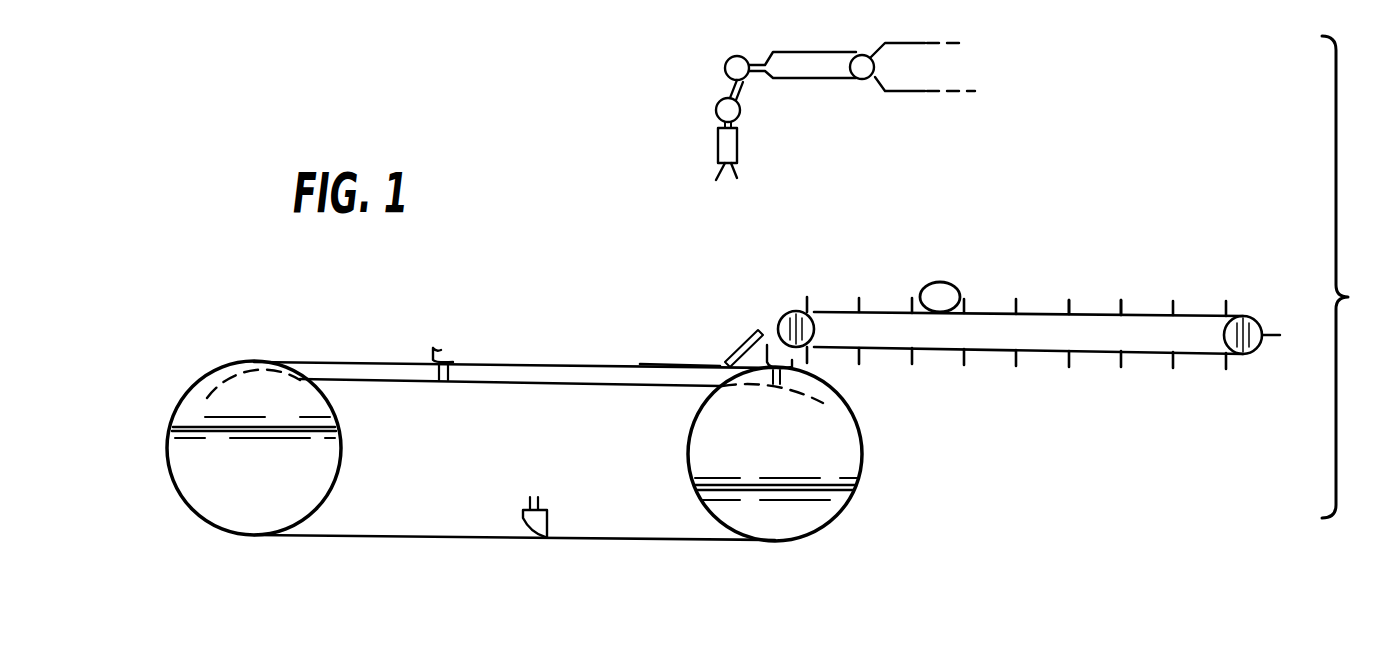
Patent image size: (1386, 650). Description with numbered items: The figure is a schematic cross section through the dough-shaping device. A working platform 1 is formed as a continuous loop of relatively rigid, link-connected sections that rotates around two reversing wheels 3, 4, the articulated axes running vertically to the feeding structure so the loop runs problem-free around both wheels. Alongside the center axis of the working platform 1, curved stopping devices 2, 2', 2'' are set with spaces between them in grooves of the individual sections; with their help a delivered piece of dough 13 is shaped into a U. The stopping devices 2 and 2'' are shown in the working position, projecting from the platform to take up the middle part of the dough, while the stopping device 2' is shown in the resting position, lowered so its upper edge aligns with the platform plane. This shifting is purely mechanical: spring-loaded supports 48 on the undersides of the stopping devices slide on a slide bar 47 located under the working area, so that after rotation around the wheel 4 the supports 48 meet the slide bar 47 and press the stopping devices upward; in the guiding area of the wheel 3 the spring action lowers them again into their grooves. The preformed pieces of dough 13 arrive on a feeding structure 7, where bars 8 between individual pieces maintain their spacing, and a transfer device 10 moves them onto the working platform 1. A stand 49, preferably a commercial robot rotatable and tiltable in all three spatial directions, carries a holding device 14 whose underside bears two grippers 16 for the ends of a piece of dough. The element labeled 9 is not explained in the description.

The working platform 1 is at (596, 366).
The curved stopping device 2 is at (455, 336).
The curved stopping device 2' is at (502, 509).
The curved stopping device 2'' is at (775, 327).
The reversing wheel 3 is at (323, 452).
The reversing wheel 4 is at (715, 450).
The feeding structure 7 is at (1152, 313).
The bar 8 is at (1124, 300).
The upper belt run 9 is at (698, 366).
The transfer device 10 is at (727, 360).
The piece of dough 13 is at (940, 297).
The holding device 14 is at (718, 143).
The gripper 16 is at (735, 172).
The slide bar 47 is at (637, 385).
The spring-loaded support 48 is at (443, 382).
The stand 49 is at (893, 68).